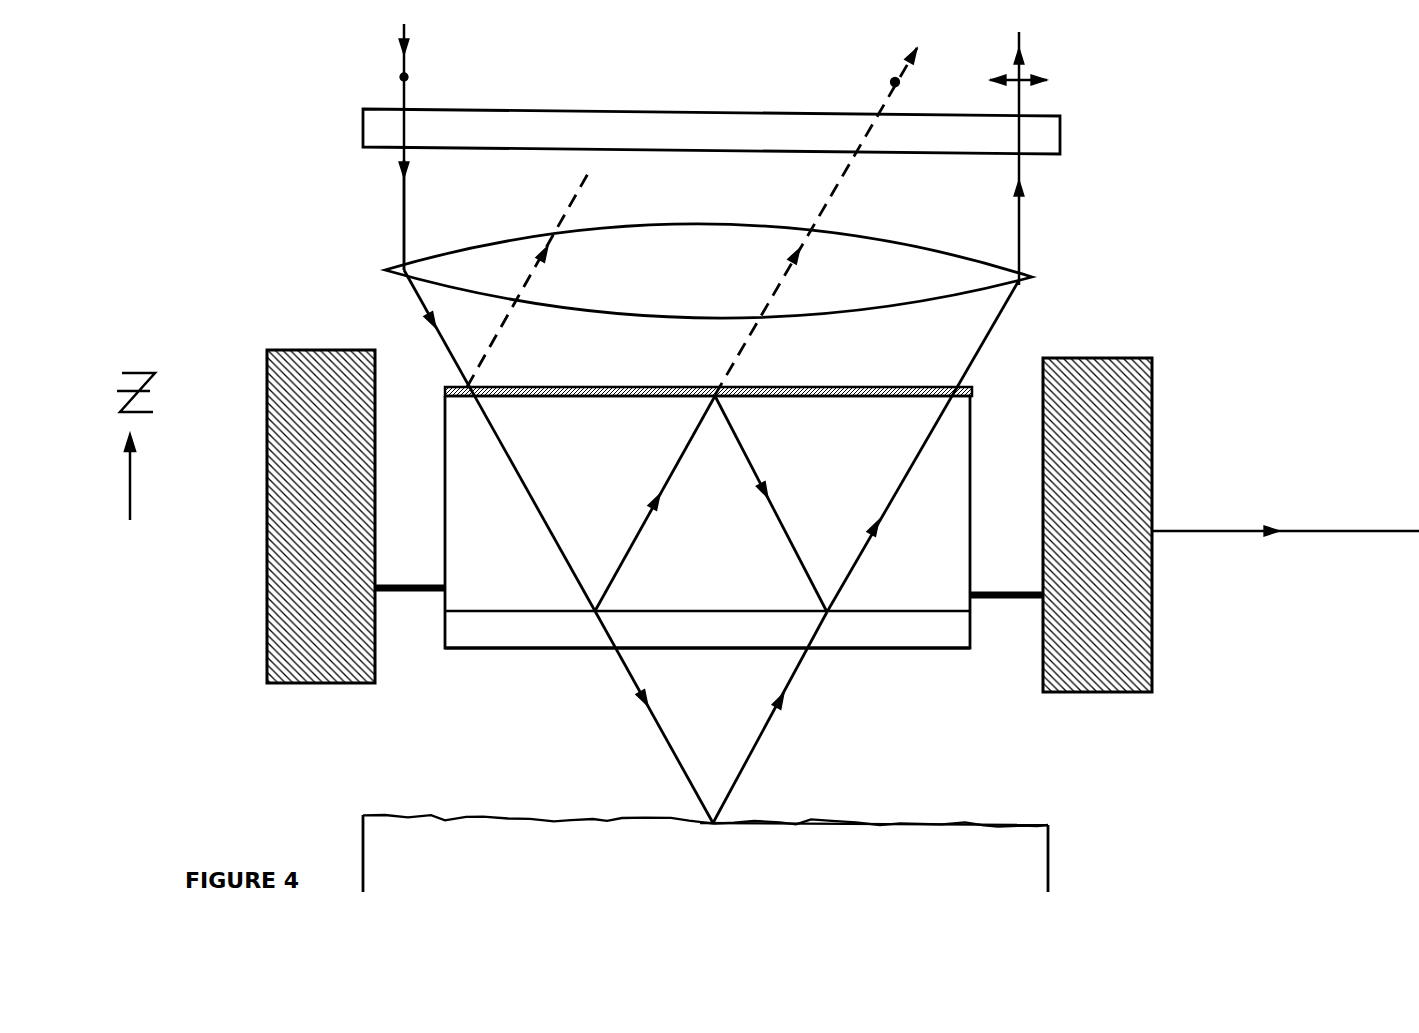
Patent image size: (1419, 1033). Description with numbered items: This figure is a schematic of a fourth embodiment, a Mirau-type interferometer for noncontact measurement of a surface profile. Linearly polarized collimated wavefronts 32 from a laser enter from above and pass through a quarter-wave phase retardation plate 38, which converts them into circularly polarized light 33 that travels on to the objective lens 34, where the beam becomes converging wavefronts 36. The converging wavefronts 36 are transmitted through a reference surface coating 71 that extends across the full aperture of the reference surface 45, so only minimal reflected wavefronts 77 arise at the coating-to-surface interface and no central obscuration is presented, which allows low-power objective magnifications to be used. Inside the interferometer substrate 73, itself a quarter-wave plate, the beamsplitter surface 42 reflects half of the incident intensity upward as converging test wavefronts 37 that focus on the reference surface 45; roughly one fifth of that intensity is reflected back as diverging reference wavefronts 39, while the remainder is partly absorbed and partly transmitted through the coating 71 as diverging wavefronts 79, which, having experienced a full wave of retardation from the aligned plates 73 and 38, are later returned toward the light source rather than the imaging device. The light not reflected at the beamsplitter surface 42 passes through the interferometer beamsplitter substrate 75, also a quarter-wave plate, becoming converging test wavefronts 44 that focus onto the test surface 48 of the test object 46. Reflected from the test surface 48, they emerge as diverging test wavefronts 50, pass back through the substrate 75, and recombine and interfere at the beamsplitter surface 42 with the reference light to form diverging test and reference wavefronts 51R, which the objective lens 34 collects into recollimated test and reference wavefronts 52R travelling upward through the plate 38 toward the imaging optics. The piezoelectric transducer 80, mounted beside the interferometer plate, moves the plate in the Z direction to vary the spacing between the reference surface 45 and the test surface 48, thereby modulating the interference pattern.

The collimated wavefronts 32 is at (398, 62).
The beam after beam splitter 33 is at (399, 193).
The quarter-wave phase retardation plate 38 is at (362, 121).
The objective lens 34 is at (955, 272).
The recollimated test and reference wavefronts 52R is at (1022, 200).
The converging wavefronts 36 is at (448, 343).
The converging test wavefronts 44 is at (646, 718).
The diverging test wavefronts 50 is at (760, 744).
The converging test wavefronts 37 is at (627, 566).
The diverging reference wavefronts 39 is at (777, 513).
The diverging test and reference wavefronts 51R is at (845, 592).
The reflected wavefronts 77 is at (533, 277).
The diverging wavefronts 79 is at (775, 294).
The interferometer substrate 73 is at (476, 449).
The reference surface coating 71 is at (581, 390).
The reference surface 45 is at (636, 400).
The beamsplitter surface 42 is at (540, 610).
The interferometer beamsplitter substrate 75 is at (462, 628).
The piezoelectric transducer 80 is at (1151, 442).
The sample 46 is at (705, 853).
The test surface 48 is at (1010, 825).